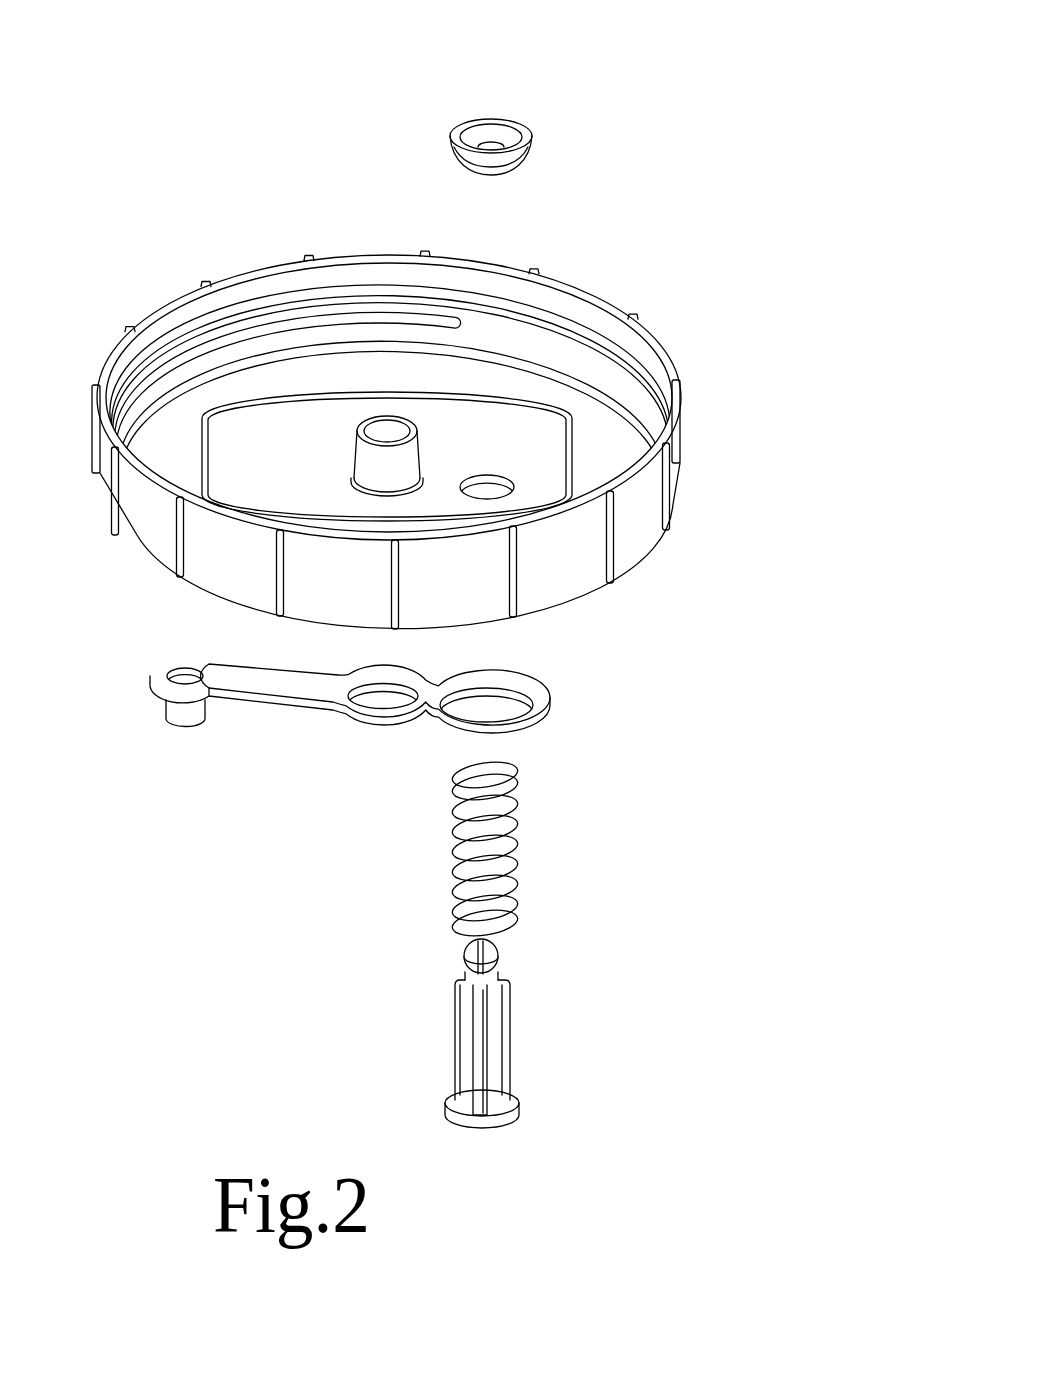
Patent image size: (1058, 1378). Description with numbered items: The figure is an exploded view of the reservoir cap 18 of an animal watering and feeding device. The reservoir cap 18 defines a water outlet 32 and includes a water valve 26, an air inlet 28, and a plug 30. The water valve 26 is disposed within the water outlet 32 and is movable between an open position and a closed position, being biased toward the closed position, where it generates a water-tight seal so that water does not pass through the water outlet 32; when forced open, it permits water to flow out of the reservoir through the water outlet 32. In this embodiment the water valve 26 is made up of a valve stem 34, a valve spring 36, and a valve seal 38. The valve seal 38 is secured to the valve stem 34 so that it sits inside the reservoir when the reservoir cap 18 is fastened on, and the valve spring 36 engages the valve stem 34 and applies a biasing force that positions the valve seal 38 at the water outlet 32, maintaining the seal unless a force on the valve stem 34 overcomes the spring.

The reservoir cap 18 is at (173, 252).
The water valve 26 is at (466, 118).
The air inlet 28 is at (382, 432).
The plug 30 is at (553, 709).
The water outlet 32 is at (492, 488).
The valve stem 34 is at (512, 1037).
The valve spring 36 is at (513, 867).
The valve seal 38 is at (528, 135).